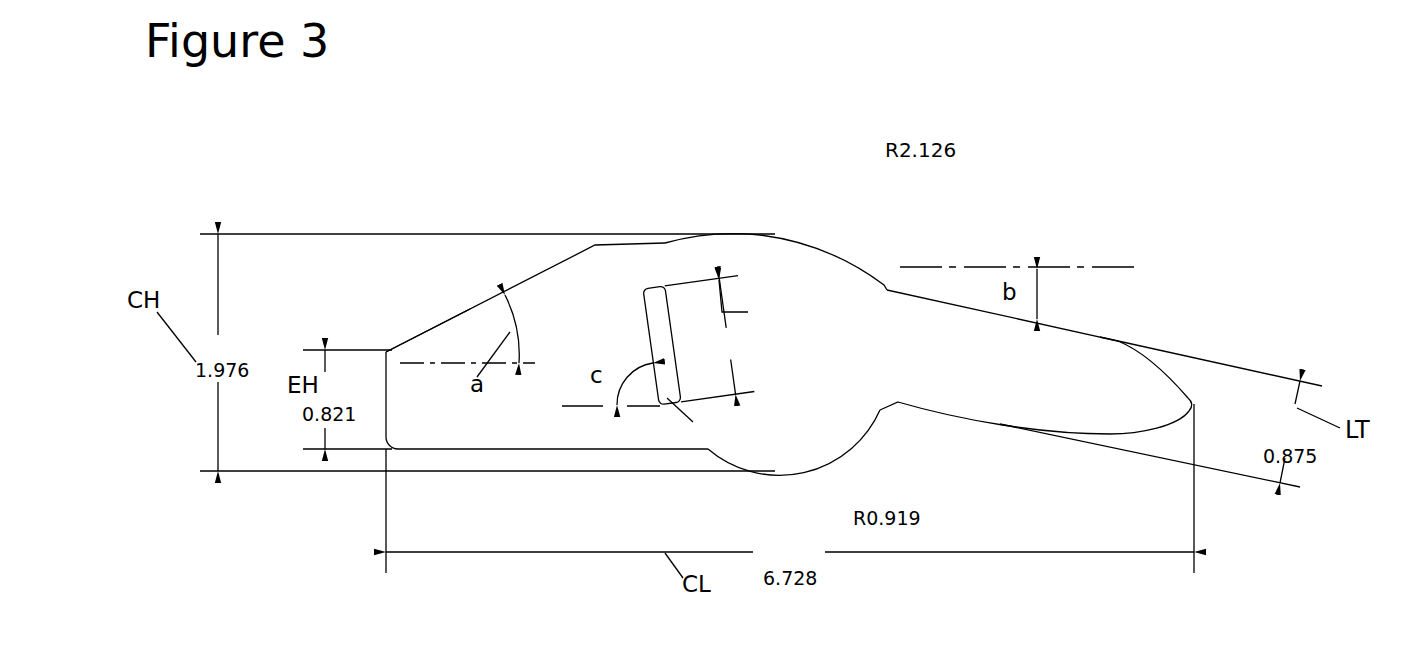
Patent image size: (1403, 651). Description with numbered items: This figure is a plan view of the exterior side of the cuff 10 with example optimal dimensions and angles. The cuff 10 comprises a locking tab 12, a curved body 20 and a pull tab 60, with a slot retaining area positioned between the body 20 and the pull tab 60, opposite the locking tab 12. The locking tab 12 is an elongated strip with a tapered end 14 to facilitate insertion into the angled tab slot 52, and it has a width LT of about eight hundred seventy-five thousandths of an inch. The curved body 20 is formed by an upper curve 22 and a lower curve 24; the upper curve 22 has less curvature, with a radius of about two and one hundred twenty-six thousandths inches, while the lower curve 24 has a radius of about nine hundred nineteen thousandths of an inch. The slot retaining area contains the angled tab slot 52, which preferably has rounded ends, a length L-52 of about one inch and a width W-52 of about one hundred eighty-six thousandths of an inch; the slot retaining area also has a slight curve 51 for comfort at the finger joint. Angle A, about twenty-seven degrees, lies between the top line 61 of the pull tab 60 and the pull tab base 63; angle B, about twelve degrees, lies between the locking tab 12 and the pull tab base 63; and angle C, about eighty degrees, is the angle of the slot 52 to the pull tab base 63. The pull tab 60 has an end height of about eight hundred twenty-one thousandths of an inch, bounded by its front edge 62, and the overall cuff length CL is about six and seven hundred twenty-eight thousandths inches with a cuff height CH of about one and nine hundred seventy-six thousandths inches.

The cuff 10 is at (1126, 164).
The locking tab 12 is at (1047, 358).
The tapered end 14 is at (1195, 406).
The curved body 20 is at (722, 240).
The upper curve 22 is at (815, 240).
The lower curve 24 is at (819, 469).
The slight curve 51 is at (890, 290).
The tab slot 52 is at (653, 329).
The pull tab 60 is at (455, 343).
The top line 61 is at (478, 306).
The handle front edge 62 is at (390, 357).
The pull tab base 63 is at (500, 448).